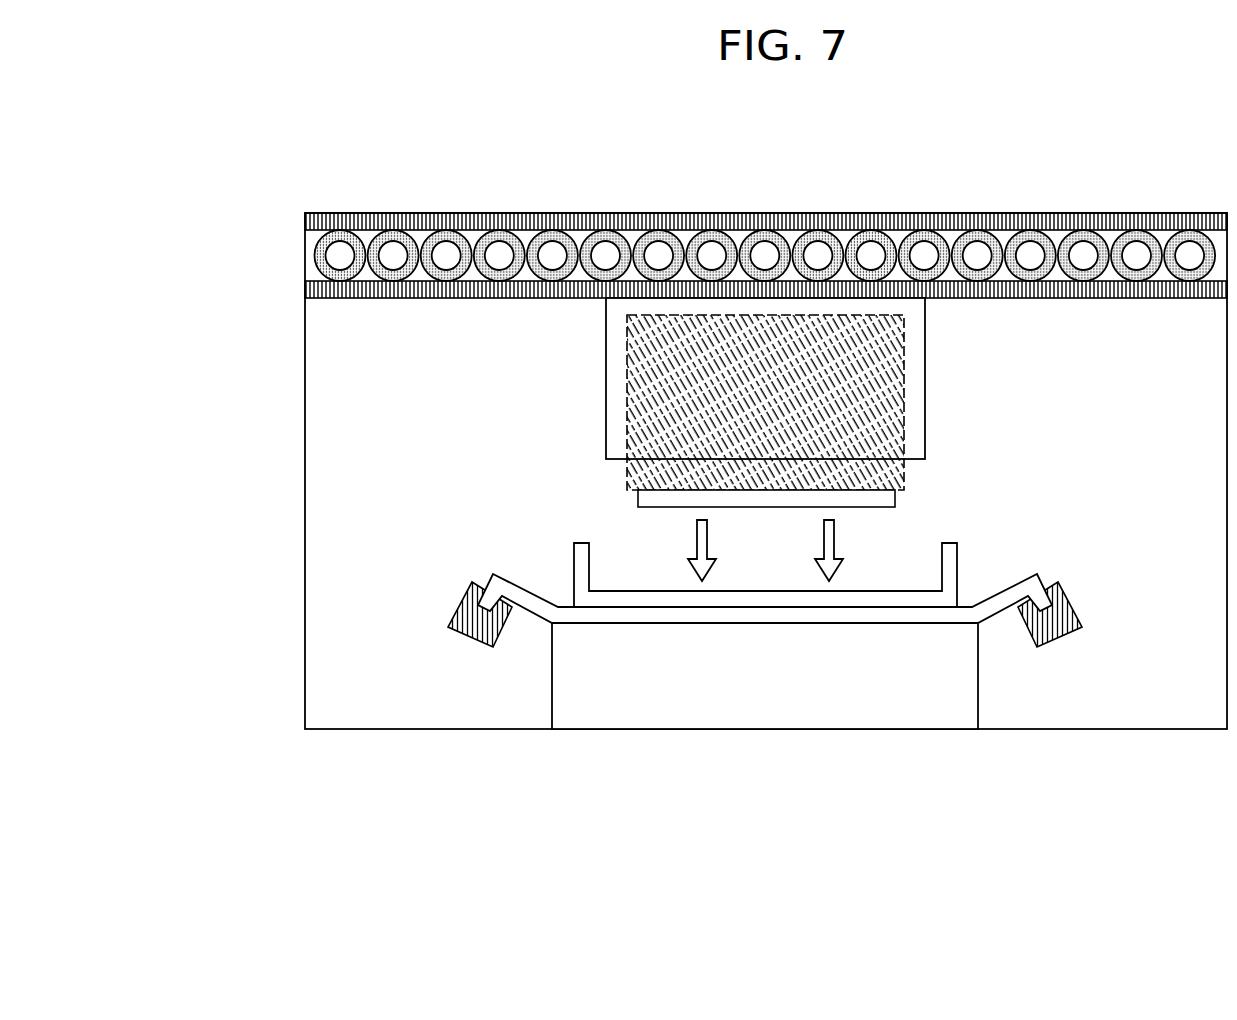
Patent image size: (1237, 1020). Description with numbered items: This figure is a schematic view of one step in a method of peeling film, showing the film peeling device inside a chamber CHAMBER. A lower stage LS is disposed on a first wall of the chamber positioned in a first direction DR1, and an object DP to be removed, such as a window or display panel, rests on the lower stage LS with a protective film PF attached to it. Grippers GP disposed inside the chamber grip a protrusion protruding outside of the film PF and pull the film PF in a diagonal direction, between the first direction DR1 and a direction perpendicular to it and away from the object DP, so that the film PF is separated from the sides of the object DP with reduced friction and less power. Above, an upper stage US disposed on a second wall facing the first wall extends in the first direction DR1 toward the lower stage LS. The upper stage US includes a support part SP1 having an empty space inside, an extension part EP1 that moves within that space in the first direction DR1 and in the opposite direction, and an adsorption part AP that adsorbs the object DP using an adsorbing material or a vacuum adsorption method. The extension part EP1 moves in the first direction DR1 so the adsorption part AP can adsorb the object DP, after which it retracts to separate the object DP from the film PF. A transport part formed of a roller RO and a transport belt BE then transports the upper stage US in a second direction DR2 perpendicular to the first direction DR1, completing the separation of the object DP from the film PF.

The chamber CHAMBER is at (305, 410).
The transport belt BE is at (391, 222).
The roller RO is at (340, 232).
The upper stage US is at (820, 406).
The support part SP1 is at (917, 370).
The extension part EP1 is at (897, 407).
The adsorption part AP is at (815, 501).
The lower stage LS is at (967, 683).
The grippers GP is at (1070, 618).
The film PF is at (1033, 587).
The object to be removed DP is at (950, 557).
The first direction DR1 is at (359, 756).
The second direction DR2 is at (359, 756).